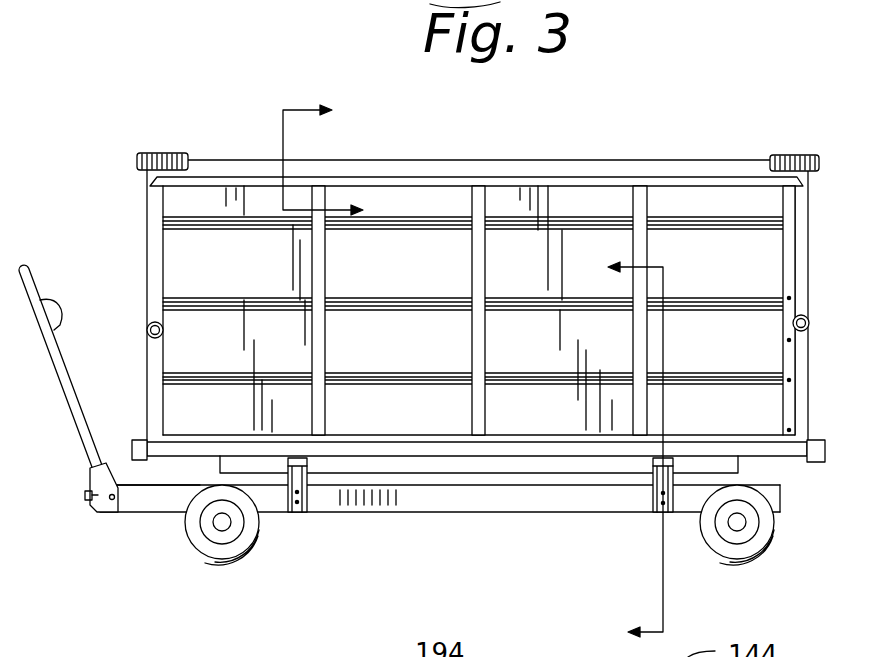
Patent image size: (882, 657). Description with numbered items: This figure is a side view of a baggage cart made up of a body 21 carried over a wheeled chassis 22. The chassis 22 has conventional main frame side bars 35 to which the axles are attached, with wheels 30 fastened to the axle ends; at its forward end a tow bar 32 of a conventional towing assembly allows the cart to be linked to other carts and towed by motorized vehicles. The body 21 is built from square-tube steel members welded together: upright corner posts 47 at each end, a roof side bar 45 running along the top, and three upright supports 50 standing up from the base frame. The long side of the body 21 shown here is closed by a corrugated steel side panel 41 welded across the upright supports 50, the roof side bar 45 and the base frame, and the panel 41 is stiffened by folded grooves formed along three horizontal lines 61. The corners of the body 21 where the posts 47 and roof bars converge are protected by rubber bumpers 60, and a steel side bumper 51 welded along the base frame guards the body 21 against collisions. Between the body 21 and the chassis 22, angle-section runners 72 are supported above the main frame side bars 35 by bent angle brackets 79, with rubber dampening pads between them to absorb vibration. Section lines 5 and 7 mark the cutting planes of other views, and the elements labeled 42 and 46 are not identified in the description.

The cart body 21 is at (820, 272).
The chassis 22 is at (581, 522).
The wheels 30 is at (215, 560).
The tow bar 32 is at (80, 428).
The chassis main frame side bars 35 is at (432, 505).
The side panel 41 is at (516, 286).
The bottom rail 42 is at (393, 433).
The roof side bar 45 is at (713, 165).
The rear corner post 46 is at (806, 378).
The corner posts 47 is at (147, 240).
The upright supports 50 is at (320, 333).
The side bumper 51 is at (794, 462).
The rubber bumpers 60 is at (153, 153).
The horizontal lines 61 is at (200, 294).
The runners 72 is at (512, 466).
The angle brackets 79 is at (312, 512).
The section line 5- 5 is at (620, 452).
The section line 7- 7 is at (335, 157).